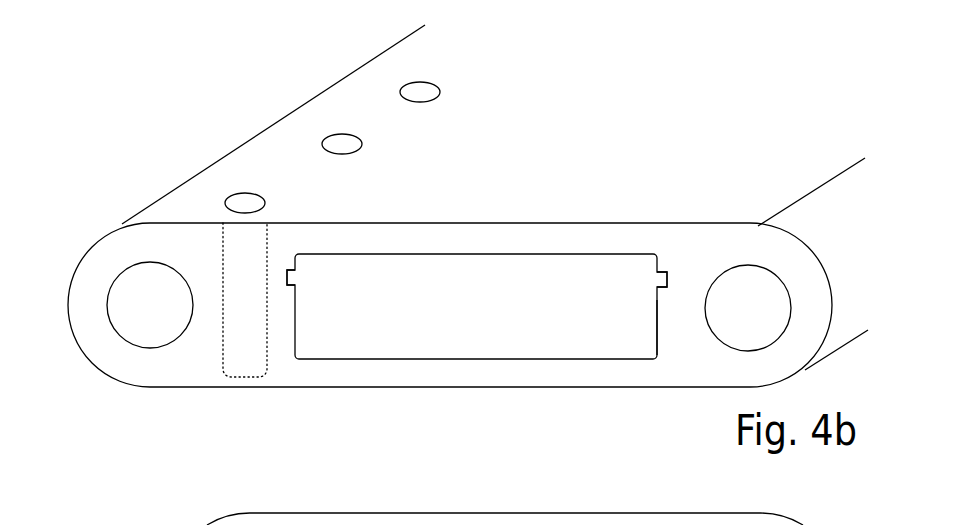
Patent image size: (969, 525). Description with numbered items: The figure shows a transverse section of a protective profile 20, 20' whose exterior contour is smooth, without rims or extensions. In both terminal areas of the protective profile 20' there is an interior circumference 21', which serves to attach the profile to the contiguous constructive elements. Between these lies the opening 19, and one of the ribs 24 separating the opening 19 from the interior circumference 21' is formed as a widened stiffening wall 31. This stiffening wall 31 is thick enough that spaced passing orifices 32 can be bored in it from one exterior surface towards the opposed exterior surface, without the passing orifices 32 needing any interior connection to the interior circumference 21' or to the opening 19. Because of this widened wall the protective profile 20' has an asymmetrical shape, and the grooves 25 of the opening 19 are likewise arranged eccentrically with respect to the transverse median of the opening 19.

The opening 19 is at (477, 306).
The protective profile 20 is at (748, 121).
The protective profile 20' is at (57, 463).
The interior circumference 21' is at (449, 306).
The rib 24 is at (667, 315).
The groove 25 is at (291, 272).
The stiffening wall 31 is at (215, 337).
The passing orifice 32 is at (418, 90).